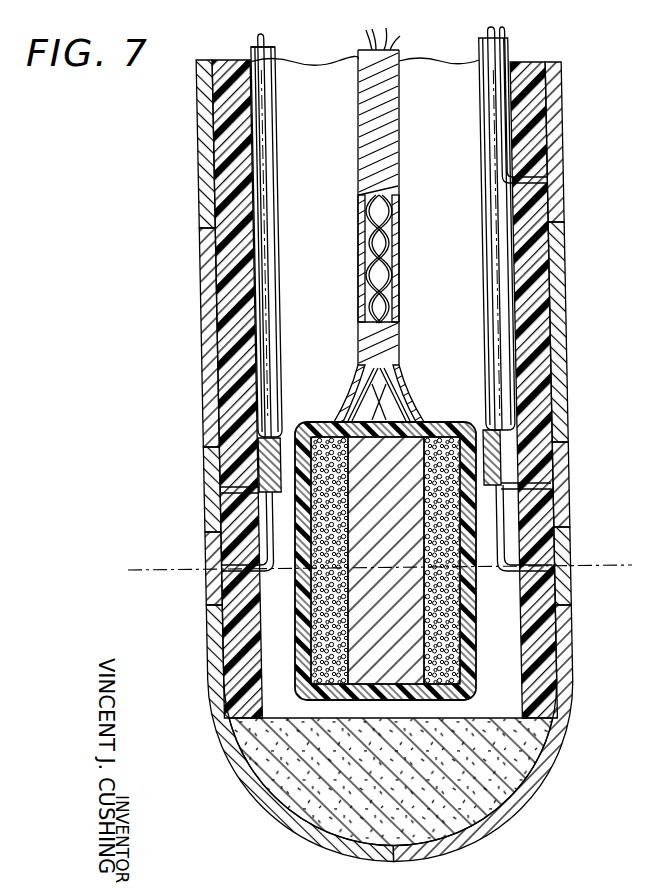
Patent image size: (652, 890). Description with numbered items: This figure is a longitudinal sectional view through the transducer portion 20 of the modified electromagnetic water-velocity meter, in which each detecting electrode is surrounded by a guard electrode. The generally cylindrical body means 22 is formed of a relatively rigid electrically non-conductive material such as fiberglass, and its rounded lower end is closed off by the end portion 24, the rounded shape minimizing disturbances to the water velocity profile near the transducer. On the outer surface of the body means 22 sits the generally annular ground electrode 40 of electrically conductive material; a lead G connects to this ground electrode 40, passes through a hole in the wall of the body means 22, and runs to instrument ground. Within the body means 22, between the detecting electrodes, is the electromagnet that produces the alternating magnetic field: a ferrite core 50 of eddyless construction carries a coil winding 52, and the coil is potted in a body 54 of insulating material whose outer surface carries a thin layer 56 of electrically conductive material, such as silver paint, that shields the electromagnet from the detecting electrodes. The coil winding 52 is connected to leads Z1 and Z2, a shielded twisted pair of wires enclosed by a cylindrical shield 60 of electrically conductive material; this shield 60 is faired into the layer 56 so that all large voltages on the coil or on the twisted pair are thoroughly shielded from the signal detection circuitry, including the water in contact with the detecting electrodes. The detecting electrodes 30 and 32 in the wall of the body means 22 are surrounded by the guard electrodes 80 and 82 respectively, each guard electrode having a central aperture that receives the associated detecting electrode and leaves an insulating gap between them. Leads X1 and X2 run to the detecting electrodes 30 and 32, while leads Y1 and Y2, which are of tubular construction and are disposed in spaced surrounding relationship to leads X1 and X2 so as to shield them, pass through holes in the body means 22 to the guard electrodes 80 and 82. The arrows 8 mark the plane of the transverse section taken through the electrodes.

The probe assembly 20 is at (160, 217).
The body means 22 is at (567, 329).
The end portion 24 is at (413, 796).
The detecting electrode 30 is at (205, 563).
The detecting electrode 32 is at (569, 548).
The ground electrode 40 is at (198, 163).
The core 50 is at (366, 672).
The coil winding 52 is at (446, 684).
The body of insulating material 54 is at (466, 584).
The thin layer of electrically conductive material 56 is at (476, 634).
The cylindrical shield 60 is at (400, 238).
The guard electrode 80 is at (208, 638).
The guard electrode 82 is at (572, 652).
The section line 8- 8 is at (608, 578).
The lead X1 is at (260, 50).
The lead Y1 is at (276, 48).
The lead Z1 is at (364, 49).
The lead Z2 is at (386, 47).
The lead Y2 is at (480, 55).
The lead X2 is at (482, 68).
The lead G is at (509, 41).